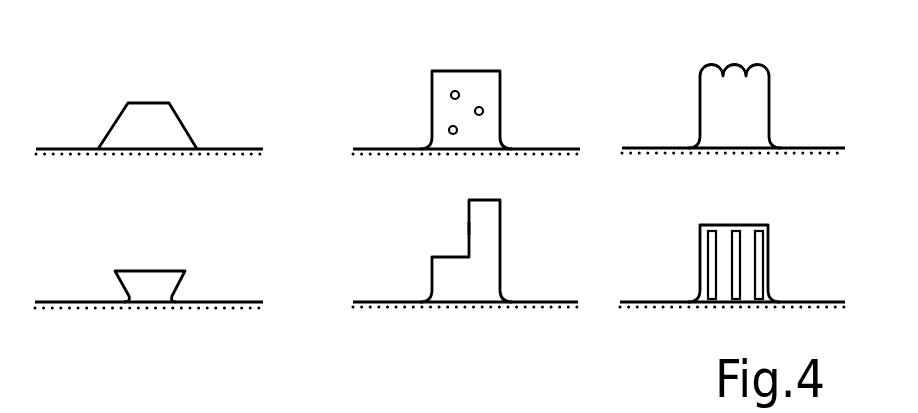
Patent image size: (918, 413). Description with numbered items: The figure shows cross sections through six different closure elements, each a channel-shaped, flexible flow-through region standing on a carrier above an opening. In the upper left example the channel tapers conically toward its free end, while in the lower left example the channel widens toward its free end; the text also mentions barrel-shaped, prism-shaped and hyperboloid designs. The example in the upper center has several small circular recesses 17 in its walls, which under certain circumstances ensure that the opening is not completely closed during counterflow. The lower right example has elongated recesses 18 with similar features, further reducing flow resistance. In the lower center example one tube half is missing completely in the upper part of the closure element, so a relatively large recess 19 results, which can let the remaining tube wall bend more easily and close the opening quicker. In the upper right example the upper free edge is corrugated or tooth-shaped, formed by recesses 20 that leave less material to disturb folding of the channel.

The circular recess 17 is at (483, 111).
The elongated recess 18 is at (759, 250).
The large recess 19 is at (452, 230).
The recess 20 is at (721, 77).